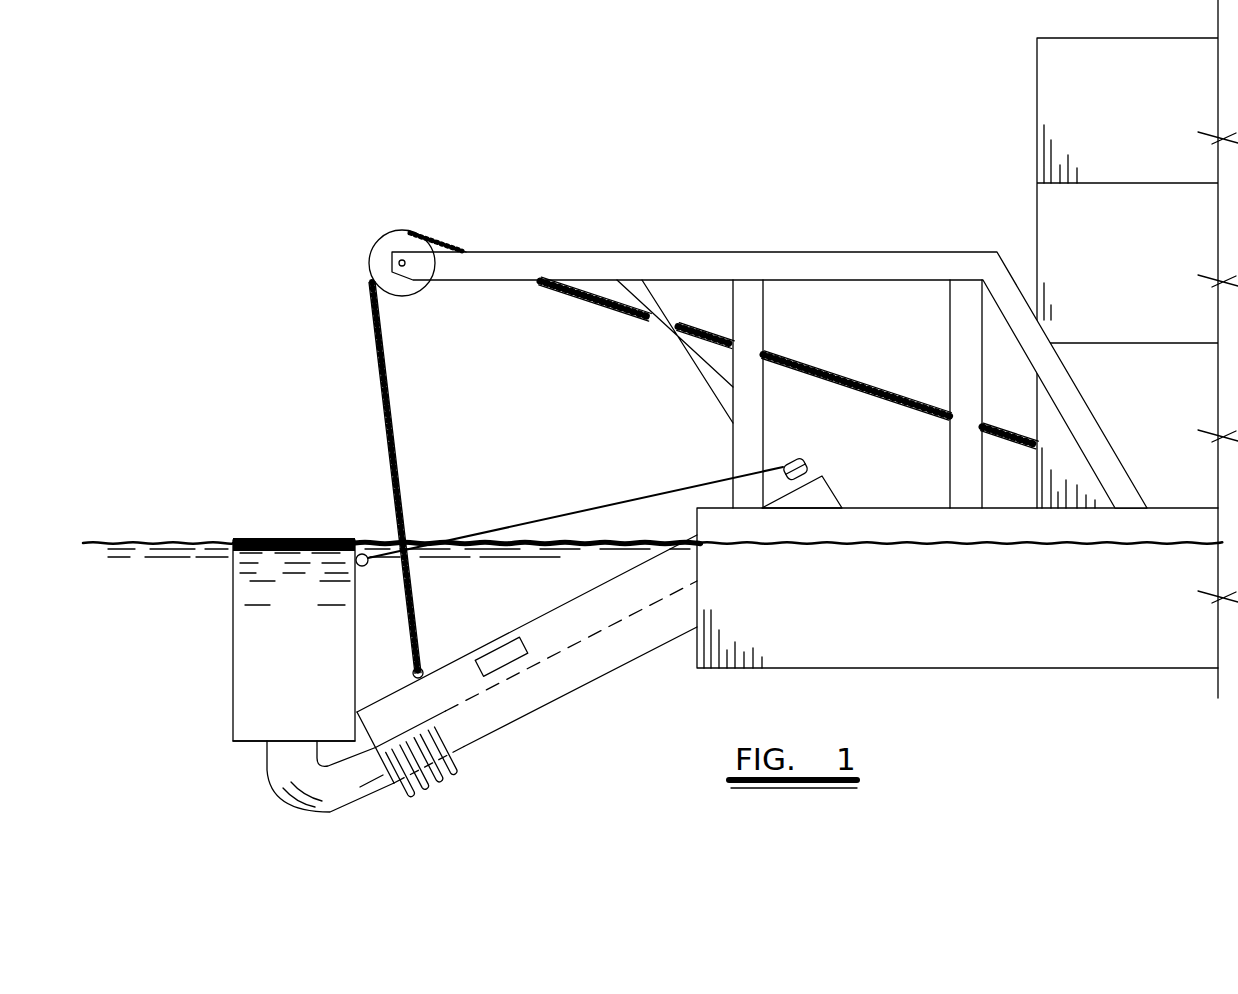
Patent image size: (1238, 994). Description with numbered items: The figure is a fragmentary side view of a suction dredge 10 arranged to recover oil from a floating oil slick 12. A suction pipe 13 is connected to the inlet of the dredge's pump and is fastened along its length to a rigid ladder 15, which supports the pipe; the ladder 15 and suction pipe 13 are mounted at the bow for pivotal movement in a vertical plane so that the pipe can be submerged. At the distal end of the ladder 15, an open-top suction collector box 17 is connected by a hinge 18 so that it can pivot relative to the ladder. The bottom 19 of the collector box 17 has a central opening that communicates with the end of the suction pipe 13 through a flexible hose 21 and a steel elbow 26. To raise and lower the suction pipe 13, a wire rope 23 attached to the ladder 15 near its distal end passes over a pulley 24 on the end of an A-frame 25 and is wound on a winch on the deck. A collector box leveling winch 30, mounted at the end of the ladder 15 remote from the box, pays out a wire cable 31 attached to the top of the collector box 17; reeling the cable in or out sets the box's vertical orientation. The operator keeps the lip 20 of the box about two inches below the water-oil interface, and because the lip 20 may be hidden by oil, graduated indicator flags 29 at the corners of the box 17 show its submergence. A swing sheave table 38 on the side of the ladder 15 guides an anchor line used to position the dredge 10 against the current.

The suction dredge 10 is at (1005, 609).
The oil slick 12 is at (167, 540).
The suction pipe 13 is at (637, 643).
The ladder 15 is at (592, 603).
The suction collector box 17 is at (233, 693).
The hinge 18 is at (355, 712).
The bottom 19 is at (265, 745).
The lip 20 is at (273, 553).
The flexible hose 21 is at (440, 760).
The wire rope 23 is at (393, 420).
The pulley 24 is at (378, 245).
The A-frame 25 is at (618, 250).
The steel elbow 26 is at (290, 800).
The indicator flags 29 is at (230, 538).
The collector box leveling winch 30 is at (800, 462).
The wire cable 31 is at (643, 497).
The swing sheave table 38 is at (490, 657).